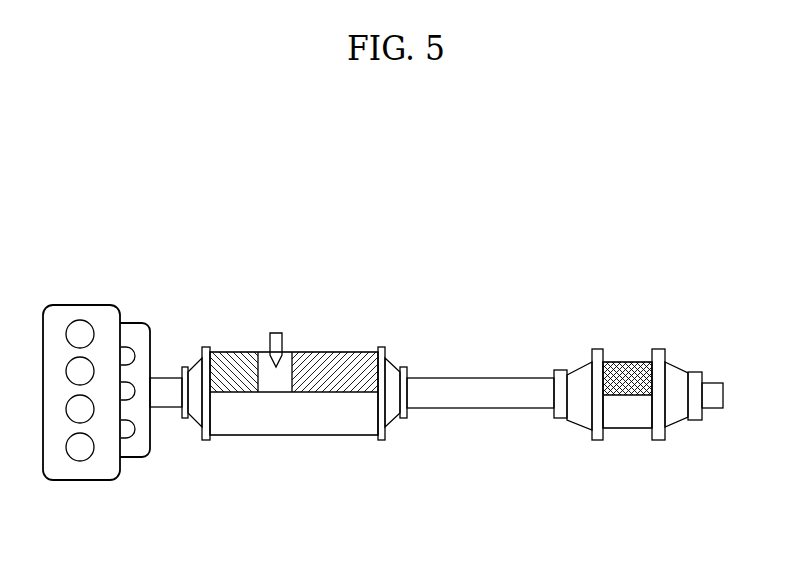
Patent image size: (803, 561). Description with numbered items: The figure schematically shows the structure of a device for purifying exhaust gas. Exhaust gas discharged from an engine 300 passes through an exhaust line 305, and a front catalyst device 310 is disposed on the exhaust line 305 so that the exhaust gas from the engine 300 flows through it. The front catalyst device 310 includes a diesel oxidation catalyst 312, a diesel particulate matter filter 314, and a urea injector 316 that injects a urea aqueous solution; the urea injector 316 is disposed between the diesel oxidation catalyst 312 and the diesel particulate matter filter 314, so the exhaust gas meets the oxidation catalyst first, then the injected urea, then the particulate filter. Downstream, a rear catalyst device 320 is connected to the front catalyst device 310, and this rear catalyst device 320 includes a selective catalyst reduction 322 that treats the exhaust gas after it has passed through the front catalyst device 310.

The engine 300 is at (65, 305).
The exhaust line 305 is at (168, 407).
The front catalyst device 310 is at (294, 395).
The diesel oxidation catalyst (DOC) 312 is at (223, 360).
The diesel particulate matter filter (DPF) 314 is at (355, 362).
The urea injector 316 is at (275, 332).
The rear catalyst device 320 is at (565, 408).
The selective catalyst reduction (SCR) 322 is at (627, 362).